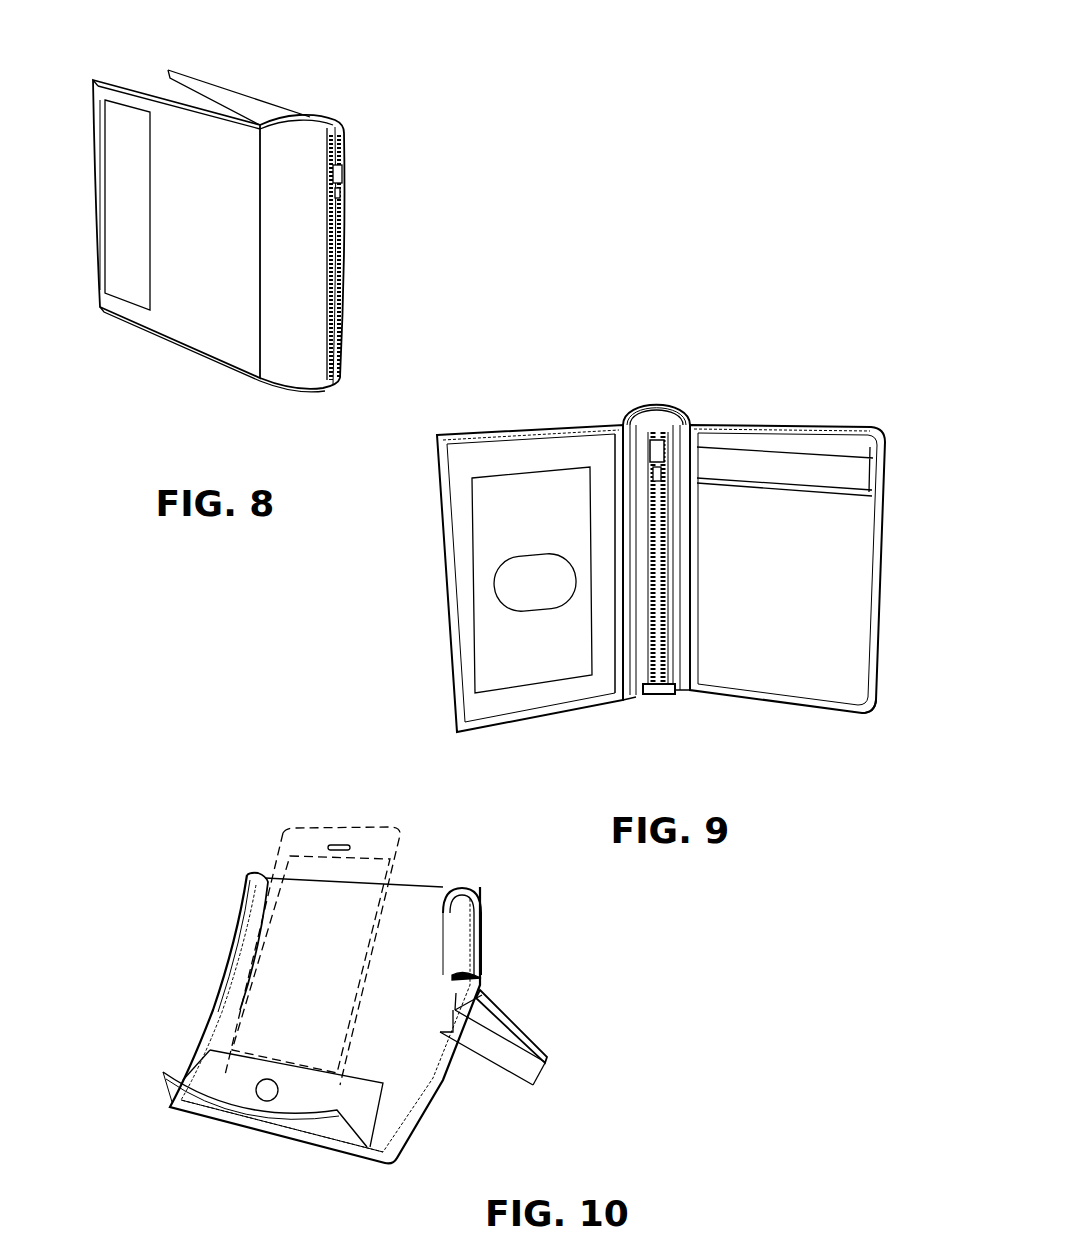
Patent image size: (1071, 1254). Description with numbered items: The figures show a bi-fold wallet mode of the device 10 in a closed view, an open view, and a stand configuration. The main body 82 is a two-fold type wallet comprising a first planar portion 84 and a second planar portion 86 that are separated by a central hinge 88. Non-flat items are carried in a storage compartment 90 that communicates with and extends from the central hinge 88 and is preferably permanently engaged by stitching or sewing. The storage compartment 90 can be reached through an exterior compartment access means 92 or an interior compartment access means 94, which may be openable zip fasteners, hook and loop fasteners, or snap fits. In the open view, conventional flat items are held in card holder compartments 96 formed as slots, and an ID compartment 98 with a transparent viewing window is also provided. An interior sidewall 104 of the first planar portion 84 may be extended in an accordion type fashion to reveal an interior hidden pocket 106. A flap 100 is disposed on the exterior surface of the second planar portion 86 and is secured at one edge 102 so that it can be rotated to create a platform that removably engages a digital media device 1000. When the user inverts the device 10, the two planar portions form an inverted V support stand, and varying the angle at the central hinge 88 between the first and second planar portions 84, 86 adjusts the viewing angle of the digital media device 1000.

In FIG. 8, the device 10 is at (478, 128).
In FIG. 9, the device 10 is at (745, 291).
In FIG. 10, the device 10 is at (140, 762).
In FIG. 8, the main body 82 is at (125, 97).
In FIG. 9, the main body 82 is at (858, 718).
In FIG. 10, the main body 82 is at (407, 1140).
In FIG. 8, the first planar portion 84 is at (245, 90).
In FIG. 9, the first planar portion 84 is at (520, 430).
In FIG. 10, the first planar portion 84 is at (517, 1020).
In FIG. 8, the second planar portion 86 is at (192, 317).
In FIG. 9, the second planar portion 86 is at (806, 425).
In FIG. 10, the second planar portion 86 is at (208, 1025).
In FIG. 8, the central hinge 88 is at (262, 125).
In FIG. 9, the central hinge 88 is at (628, 425).
In FIG. 10, the central hinge 88 is at (467, 977).
In FIG. 8, the storage compartment 90 is at (280, 390).
In FIG. 9, the storage compartment 90 is at (674, 403).
In FIG. 10, the storage compartment 90 is at (245, 875).
In FIG. 8, the exterior compartment access means 92 is at (345, 347).
In FIG. 9, the interior compartment access means 94 is at (670, 692).
In FIG. 9, the card holder compartments 96 is at (767, 485).
In FIG. 9, the ID compartment 98 is at (498, 615).
In FIG. 8, the flap 100 is at (125, 207).
In FIG. 10, the flap 100 is at (218, 1108).
In FIG. 8, the edge 102 is at (107, 178).
In FIG. 10, the edge 102 is at (345, 1140).
In FIG. 9, the interior sidewall 104 is at (532, 580).
In FIG. 10, the interior sidewall 104 is at (480, 1065).
In FIG. 9, the interior hidden pocket 106 is at (617, 638).
In FIG. 10, the interior hidden pocket 106 is at (458, 995).
In FIG. 10, the digital media device 1000 is at (312, 964).